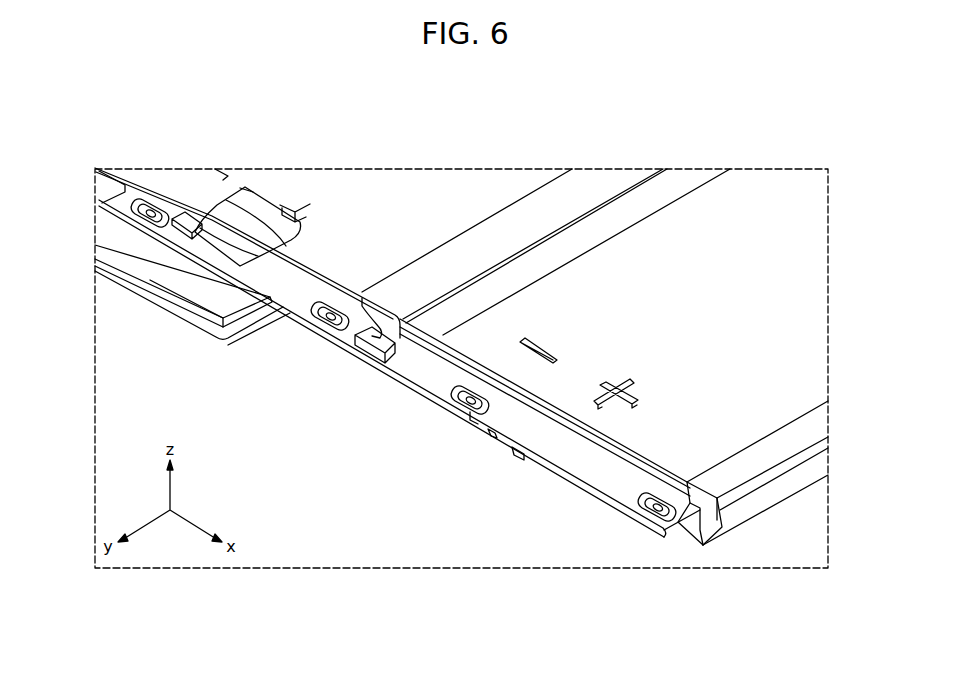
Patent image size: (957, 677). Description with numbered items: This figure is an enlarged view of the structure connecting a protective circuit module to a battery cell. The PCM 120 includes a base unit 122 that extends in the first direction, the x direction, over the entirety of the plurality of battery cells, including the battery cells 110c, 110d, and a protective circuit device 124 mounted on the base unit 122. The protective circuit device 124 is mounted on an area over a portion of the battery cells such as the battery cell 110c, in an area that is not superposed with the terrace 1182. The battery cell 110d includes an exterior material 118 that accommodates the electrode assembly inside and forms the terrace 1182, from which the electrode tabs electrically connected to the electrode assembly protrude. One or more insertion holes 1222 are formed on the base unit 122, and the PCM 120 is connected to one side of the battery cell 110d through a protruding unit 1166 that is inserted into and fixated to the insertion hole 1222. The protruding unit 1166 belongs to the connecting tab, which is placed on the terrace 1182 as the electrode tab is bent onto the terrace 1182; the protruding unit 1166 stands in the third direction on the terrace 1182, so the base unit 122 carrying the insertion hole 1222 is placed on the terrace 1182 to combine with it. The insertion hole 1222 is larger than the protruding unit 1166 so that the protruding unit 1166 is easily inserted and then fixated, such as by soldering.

The battery cell 110c is at (435, 187).
The battery cell 110d is at (785, 190).
The exterior material 118 is at (805, 378).
The PCM 120 is at (135, 303).
The base unit 122 is at (302, 302).
The protective circuit device 124 is at (207, 300).
The protruding unit 1166 is at (455, 397).
The insertion hole 1222 is at (470, 412).
The terrace 1182 is at (697, 517).